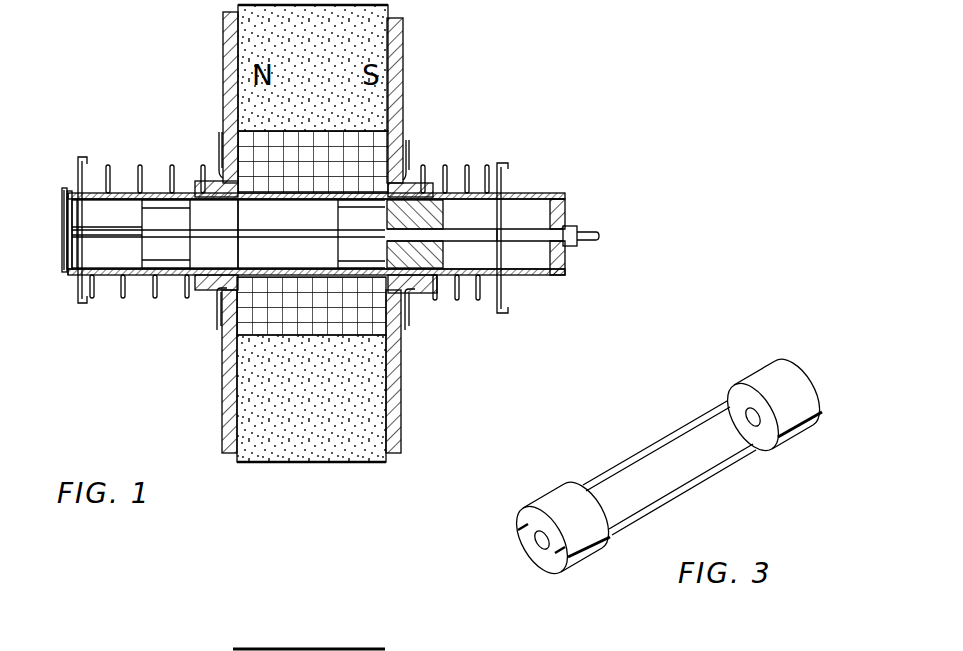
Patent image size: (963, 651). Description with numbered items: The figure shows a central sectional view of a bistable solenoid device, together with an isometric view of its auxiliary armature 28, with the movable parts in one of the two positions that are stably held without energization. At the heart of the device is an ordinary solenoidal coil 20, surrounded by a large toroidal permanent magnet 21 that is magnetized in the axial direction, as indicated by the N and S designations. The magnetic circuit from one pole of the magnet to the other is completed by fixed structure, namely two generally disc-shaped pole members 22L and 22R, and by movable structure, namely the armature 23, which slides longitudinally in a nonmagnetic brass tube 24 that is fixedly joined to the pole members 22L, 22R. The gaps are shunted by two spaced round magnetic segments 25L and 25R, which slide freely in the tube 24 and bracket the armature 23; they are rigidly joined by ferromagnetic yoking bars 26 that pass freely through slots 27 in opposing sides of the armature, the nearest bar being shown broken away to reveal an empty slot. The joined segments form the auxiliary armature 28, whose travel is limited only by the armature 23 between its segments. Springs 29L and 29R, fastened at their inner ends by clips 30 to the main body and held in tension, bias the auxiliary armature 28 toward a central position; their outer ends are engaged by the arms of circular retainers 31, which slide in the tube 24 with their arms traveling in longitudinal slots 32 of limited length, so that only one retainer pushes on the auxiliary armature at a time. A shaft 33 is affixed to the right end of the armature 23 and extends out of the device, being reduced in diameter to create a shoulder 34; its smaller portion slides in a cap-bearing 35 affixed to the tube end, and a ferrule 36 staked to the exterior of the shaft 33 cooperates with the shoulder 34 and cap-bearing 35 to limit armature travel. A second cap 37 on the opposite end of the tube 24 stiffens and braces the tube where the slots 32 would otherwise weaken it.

In FIG. 1, the solenoidal coil 20 is at (297, 315).
In FIG. 1, the permanent magnet 21 is at (290, 432).
In FIG. 1, the left pole member 22L is at (214, 292).
In FIG. 1, the right pole member 22R is at (406, 86).
In FIG. 1, the armature 23 is at (270, 226).
In FIG. 1, the tube 24 is at (141, 192).
In FIG. 1, the left magnetic segment 25L is at (128, 223).
In FIG. 3, the left magnetic segment 25L is at (547, 503).
In FIG. 1, the right magnetic segment 25R is at (437, 282).
In FIG. 3, the right magnetic segment 25R is at (807, 437).
In FIG. 1, the yoking bars 26 is at (168, 233).
In FIG. 3, the yoking bars 26 is at (662, 447).
In FIG. 1, the slots 27 is at (227, 233).
In FIG. 3, the auxiliary armature 28 is at (677, 468).
In FIG. 1, the left spring 29L is at (155, 290).
In FIG. 1, the right spring 29R is at (461, 164).
In FIG. 1, the clips 30 is at (405, 305).
In FIG. 1, the retainers 31 is at (80, 158).
In FIG. 1, the longitudinal slots 32 is at (92, 284).
In FIG. 1, the shaft 33 is at (465, 241).
In FIG. 1, the shoulder 34 is at (497, 240).
In FIG. 1, the cap-bearing 35 is at (565, 270).
In FIG. 1, the ferrule 36 is at (577, 231).
In FIG. 1, the second cap 37 is at (66, 232).